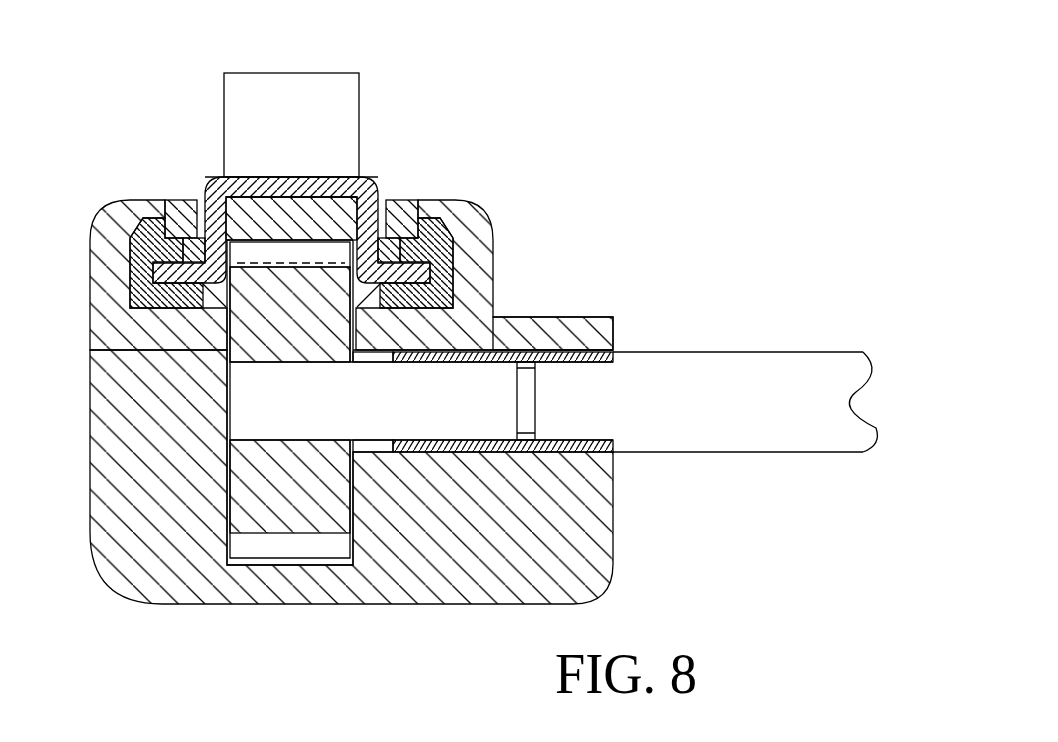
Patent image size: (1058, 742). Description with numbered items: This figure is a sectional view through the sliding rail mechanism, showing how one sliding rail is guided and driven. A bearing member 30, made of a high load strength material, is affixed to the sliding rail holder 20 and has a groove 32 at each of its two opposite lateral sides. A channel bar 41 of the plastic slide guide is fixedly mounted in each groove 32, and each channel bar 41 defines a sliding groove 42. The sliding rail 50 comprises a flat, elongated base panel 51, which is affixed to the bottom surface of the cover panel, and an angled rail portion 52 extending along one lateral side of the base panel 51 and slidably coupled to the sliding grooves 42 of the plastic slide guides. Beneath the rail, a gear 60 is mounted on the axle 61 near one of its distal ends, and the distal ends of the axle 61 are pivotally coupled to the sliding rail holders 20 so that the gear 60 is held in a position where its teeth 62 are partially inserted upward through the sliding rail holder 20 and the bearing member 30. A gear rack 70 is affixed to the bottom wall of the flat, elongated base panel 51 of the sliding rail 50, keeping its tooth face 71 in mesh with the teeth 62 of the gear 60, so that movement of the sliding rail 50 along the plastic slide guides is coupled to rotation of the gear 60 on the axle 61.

The sliding rail holder 20 is at (128, 552).
The bearing member 30 is at (100, 293).
The groove 32 is at (463, 292).
The channel bar 41 is at (145, 220).
The sliding groove 42 is at (420, 270).
The sliding rail 50 is at (380, 177).
The flat, elongated base panel 51 is at (261, 200).
The angled rail portion 52 is at (173, 203).
The gear 60 is at (248, 477).
The axle 61 is at (693, 373).
The teeth 62 is at (293, 262).
The gear rack 70 is at (333, 207).
The tooth face 71 is at (230, 177).